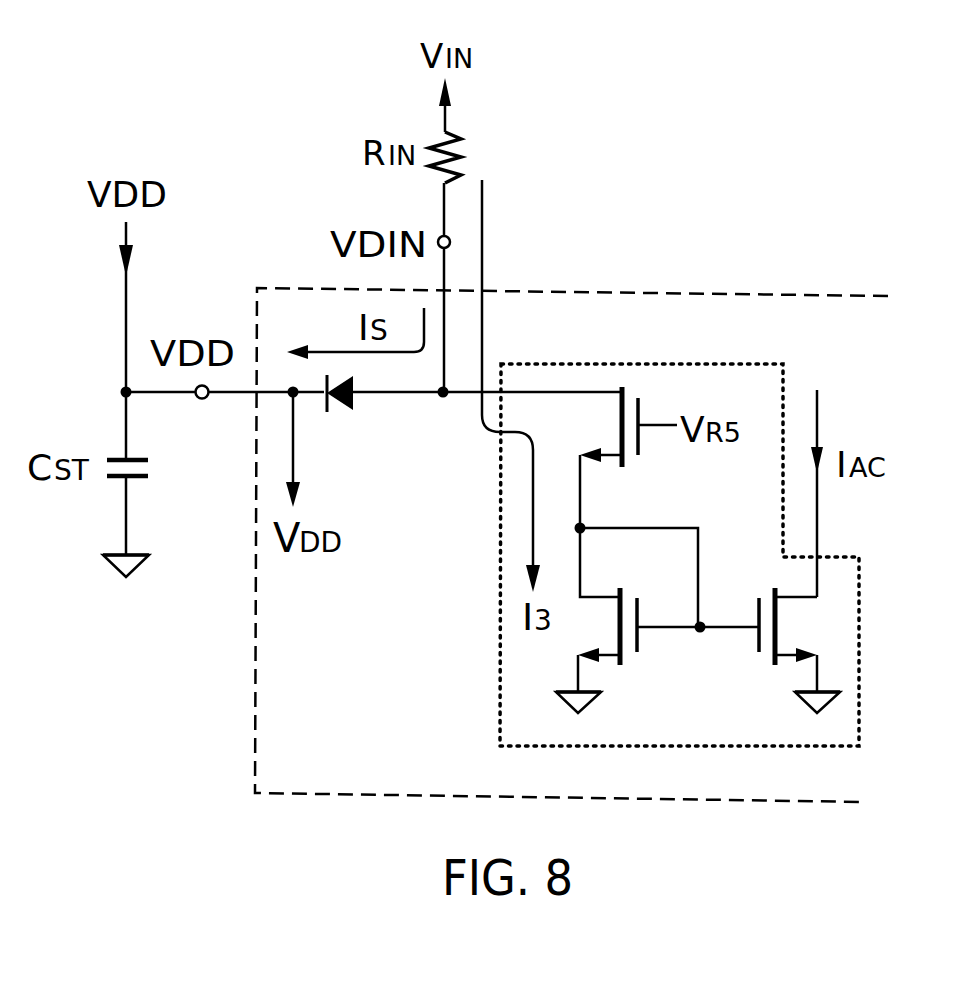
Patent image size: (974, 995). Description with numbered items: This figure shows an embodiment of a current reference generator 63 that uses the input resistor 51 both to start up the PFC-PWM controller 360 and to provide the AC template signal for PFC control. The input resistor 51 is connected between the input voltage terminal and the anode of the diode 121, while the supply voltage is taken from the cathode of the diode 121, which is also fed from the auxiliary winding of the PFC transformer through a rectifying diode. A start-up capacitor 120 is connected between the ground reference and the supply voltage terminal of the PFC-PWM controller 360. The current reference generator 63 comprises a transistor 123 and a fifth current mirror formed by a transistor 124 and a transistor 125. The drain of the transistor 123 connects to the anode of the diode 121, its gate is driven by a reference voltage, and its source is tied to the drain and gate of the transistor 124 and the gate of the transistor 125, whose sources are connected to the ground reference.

The input resistor RIN 51 is at (472, 156).
The current sensing circuit block 360 is at (770, 297).
The current mirror circuit 63 is at (497, 675).
The diode 121 is at (360, 408).
The storage capacitor CST 120 is at (105, 495).
The transistor 123 is at (645, 457).
The transistor 124 is at (640, 658).
The transistor 125 is at (818, 633).